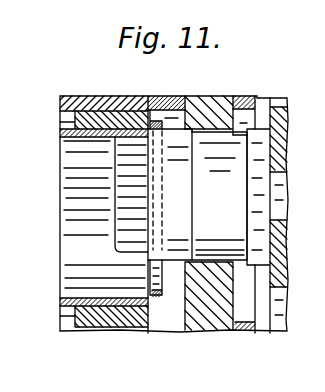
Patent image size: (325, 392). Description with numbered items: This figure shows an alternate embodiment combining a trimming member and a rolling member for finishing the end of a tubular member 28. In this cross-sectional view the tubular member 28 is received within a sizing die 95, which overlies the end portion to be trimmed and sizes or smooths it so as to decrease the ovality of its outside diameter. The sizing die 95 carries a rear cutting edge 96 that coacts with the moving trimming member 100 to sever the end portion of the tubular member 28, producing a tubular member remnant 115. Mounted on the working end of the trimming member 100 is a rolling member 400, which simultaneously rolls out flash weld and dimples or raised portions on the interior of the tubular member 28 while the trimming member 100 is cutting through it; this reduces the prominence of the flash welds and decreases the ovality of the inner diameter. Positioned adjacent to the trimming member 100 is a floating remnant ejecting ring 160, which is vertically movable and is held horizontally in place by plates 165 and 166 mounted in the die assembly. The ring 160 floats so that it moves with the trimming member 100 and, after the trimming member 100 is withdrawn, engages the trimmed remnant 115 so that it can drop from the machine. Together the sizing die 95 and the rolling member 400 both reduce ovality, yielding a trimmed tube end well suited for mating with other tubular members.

The tubular member 28 is at (78, 138).
The sizing die 95 is at (101, 112).
The rear cutting edge 96 is at (158, 110).
The trimming member 100 is at (170, 196).
The tubular member remnant 115 is at (163, 287).
The floating remnant ejecting ring 160 is at (207, 110).
The plate 165 is at (172, 102).
The plate 166 is at (250, 108).
The rolling member 400 is at (127, 163).